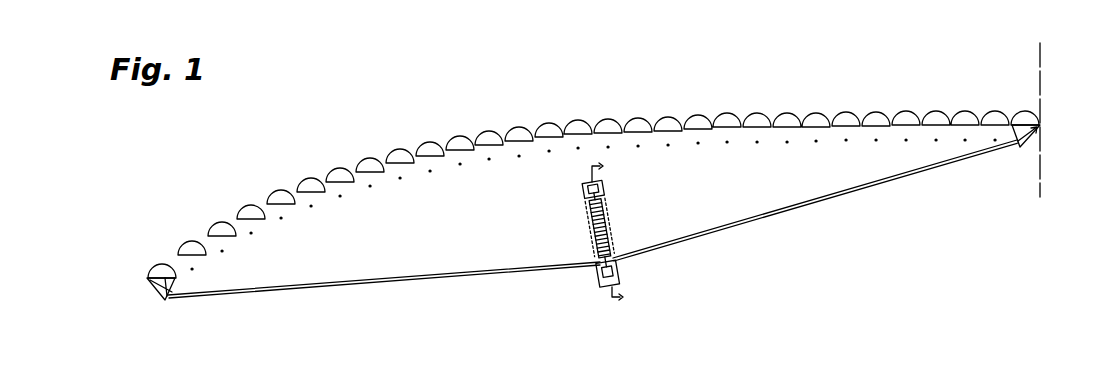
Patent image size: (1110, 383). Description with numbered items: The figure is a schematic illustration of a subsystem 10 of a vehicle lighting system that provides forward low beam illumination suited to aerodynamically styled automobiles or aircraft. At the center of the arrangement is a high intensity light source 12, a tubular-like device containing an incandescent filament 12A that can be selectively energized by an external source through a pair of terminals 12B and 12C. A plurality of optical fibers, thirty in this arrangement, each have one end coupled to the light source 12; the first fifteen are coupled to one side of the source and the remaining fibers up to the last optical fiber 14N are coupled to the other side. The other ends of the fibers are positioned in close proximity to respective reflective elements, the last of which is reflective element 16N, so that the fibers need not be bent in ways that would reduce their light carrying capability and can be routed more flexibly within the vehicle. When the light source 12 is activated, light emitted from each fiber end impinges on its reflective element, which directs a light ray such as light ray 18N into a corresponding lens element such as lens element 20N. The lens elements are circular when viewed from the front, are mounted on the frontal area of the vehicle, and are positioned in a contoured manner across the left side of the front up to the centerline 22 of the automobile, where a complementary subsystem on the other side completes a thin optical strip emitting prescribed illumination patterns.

The subsystem 10 is at (771, 65).
The high intensity light source 12 is at (590, 251).
The incandescent filament 12A is at (598, 228).
The terminal 12B is at (604, 166).
The terminal 12C is at (621, 299).
The optical fiber 14N is at (772, 212).
The reflective element 16N is at (1030, 140).
The light ray 18N is at (1043, 127).
The lens element 20N is at (1023, 112).
The centerline 22 is at (1043, 62).